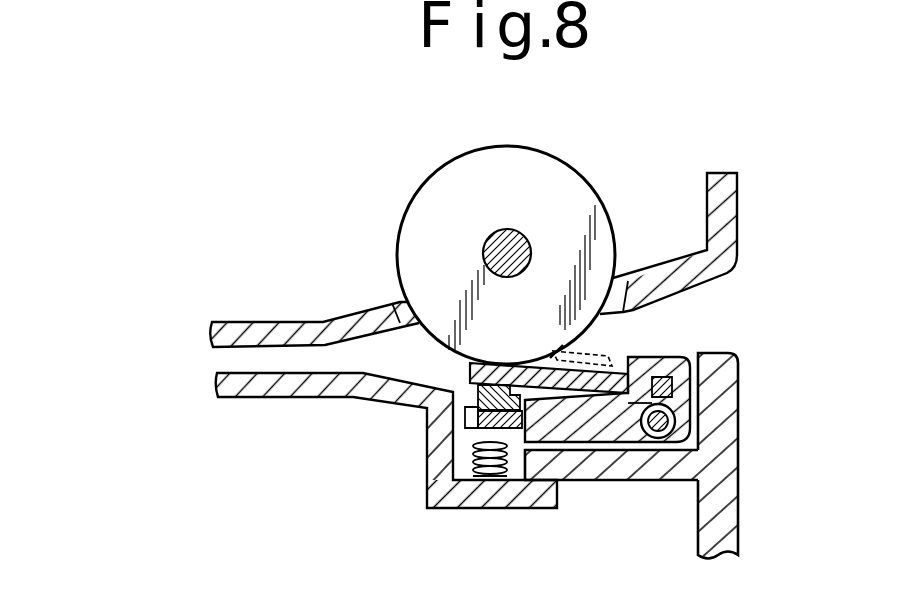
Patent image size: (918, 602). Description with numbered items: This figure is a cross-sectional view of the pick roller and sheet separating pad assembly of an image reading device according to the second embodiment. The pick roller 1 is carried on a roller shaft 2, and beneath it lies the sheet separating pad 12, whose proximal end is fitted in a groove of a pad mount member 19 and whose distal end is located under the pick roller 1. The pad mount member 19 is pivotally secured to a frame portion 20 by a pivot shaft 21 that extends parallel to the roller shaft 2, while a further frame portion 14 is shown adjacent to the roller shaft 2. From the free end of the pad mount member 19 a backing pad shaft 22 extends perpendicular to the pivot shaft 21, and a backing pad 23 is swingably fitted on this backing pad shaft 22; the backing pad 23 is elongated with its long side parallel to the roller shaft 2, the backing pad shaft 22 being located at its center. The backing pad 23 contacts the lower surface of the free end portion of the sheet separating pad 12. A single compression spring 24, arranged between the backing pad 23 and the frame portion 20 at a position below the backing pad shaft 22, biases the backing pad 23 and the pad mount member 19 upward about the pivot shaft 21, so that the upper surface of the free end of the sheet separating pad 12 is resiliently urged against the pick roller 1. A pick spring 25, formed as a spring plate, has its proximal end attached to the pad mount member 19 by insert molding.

The pick roller 1 is at (580, 206).
The roller shaft 2 is at (490, 237).
The sheet separating pad 12 is at (607, 356).
The frame portion 14 is at (727, 212).
The pad mount member 19 is at (598, 437).
The frame portion 20 is at (727, 470).
The pivot shaft 21 is at (675, 422).
The backing pad shaft 22 is at (458, 418).
The backing pad 23 is at (506, 429).
The compression spring 24 is at (472, 472).
The pick spring 25 is at (588, 347).